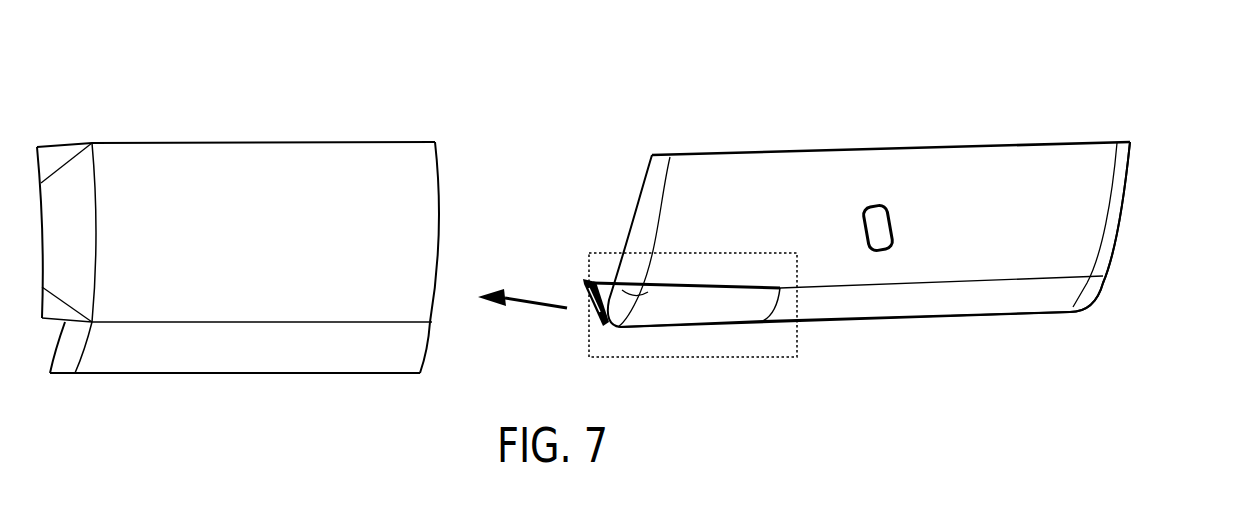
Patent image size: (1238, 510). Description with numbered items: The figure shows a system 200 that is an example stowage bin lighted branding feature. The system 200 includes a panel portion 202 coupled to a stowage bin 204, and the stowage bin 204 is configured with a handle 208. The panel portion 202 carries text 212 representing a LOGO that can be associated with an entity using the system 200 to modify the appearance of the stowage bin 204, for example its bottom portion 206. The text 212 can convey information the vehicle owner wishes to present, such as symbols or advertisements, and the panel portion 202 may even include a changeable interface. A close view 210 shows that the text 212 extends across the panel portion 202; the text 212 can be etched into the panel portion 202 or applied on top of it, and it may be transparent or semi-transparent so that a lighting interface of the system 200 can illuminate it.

The system 200 is at (566, 150).
The panel portion 202 is at (224, 130).
The stowage bin 204 is at (1124, 238).
The bottom portion 206 is at (1027, 293).
The handle 208 is at (902, 218).
The close view 210 is at (587, 345).
The text 212 is at (337, 183).